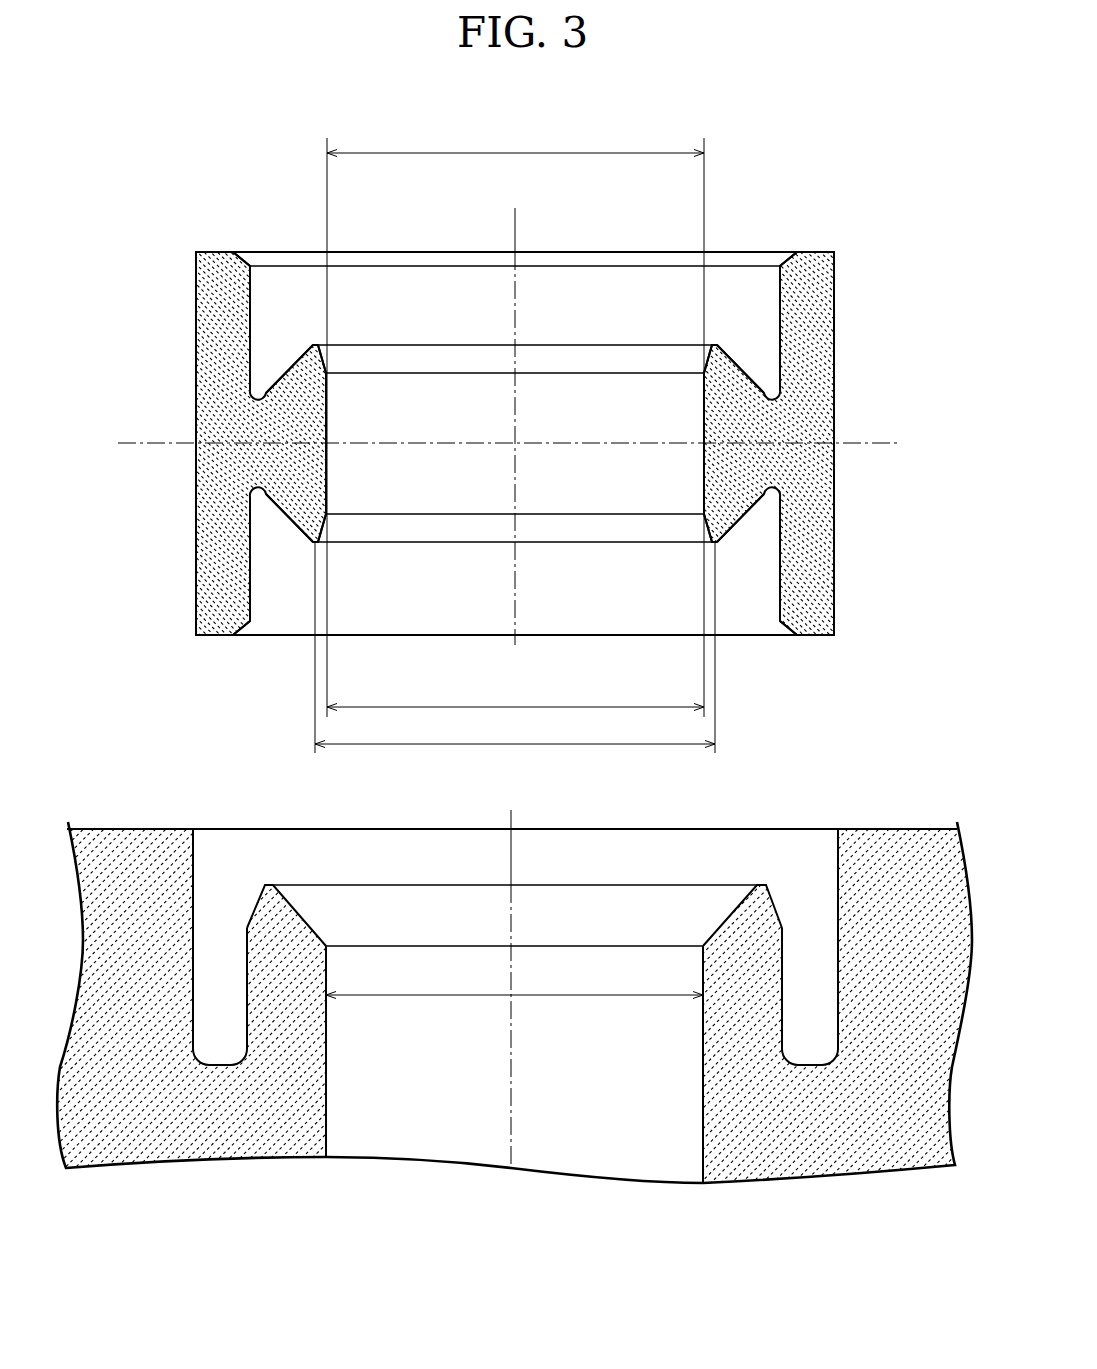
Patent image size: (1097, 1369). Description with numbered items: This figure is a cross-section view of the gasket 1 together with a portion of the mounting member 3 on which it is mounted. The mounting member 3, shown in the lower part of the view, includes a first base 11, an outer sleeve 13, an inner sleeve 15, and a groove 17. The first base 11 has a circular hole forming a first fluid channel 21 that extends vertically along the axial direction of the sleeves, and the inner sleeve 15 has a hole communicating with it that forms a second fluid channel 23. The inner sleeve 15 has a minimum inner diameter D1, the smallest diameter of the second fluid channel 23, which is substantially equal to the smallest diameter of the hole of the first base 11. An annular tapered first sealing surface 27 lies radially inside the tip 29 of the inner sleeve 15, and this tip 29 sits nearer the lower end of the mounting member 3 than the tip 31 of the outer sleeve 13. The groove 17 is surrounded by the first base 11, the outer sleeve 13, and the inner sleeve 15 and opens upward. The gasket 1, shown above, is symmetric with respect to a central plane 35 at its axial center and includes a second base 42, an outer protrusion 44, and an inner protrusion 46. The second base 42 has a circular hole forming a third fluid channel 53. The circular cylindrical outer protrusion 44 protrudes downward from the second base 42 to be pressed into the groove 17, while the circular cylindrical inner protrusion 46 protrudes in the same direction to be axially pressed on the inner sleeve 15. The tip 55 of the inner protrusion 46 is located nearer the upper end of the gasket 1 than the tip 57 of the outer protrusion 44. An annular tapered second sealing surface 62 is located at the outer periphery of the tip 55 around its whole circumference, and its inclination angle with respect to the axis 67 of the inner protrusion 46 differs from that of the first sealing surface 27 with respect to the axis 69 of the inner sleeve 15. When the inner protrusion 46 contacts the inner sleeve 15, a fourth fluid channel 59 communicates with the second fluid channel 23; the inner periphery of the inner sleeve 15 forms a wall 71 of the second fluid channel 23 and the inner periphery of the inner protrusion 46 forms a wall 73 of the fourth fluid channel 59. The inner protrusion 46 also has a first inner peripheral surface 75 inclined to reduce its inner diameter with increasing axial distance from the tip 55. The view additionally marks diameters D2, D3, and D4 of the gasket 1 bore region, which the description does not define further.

The gasket 1 is at (878, 202).
The mounting member 3 is at (908, 797).
The first base 11 is at (338, 1139).
The outer sleeve 13 is at (91, 821).
The inner sleeve 15 is at (338, 1036).
The groove 17 is at (219, 952).
The first fluid channel 21 is at (586, 1144).
The second fluid channel 23 is at (586, 1039).
The first sealing surface 27 is at (302, 917).
The tip of the inner sleeve 29 is at (762, 903).
The tip of the outer sleeve 31 is at (857, 838).
The central plane 35 is at (875, 442).
The second base 42 is at (206, 421).
The outer protrusion 44 is at (206, 326).
The inner protrusion 46 is at (338, 386).
The third fluid channel 53 is at (546, 427).
The tip of the inner protrusion 55 is at (303, 362).
The tip of the outer protrusion 57 is at (818, 253).
The fourth fluid channel 59 is at (654, 346).
The second sealing surface 62 is at (742, 368).
The axis of the inner protrusion 67 is at (515, 223).
The axis of the inner sleeve 69 is at (512, 865).
The wall of the second fluid channel 71 is at (692, 971).
The wall of the fourth fluid channel 73 is at (692, 386).
The first inner peripheral surface 75 is at (318, 350).
The minimum inner diameter D1 is at (514, 981).
The inner diameter D2 is at (515, 420).
The inner diameter D3 is at (515, 690).
The lip diameter D4 is at (515, 662).